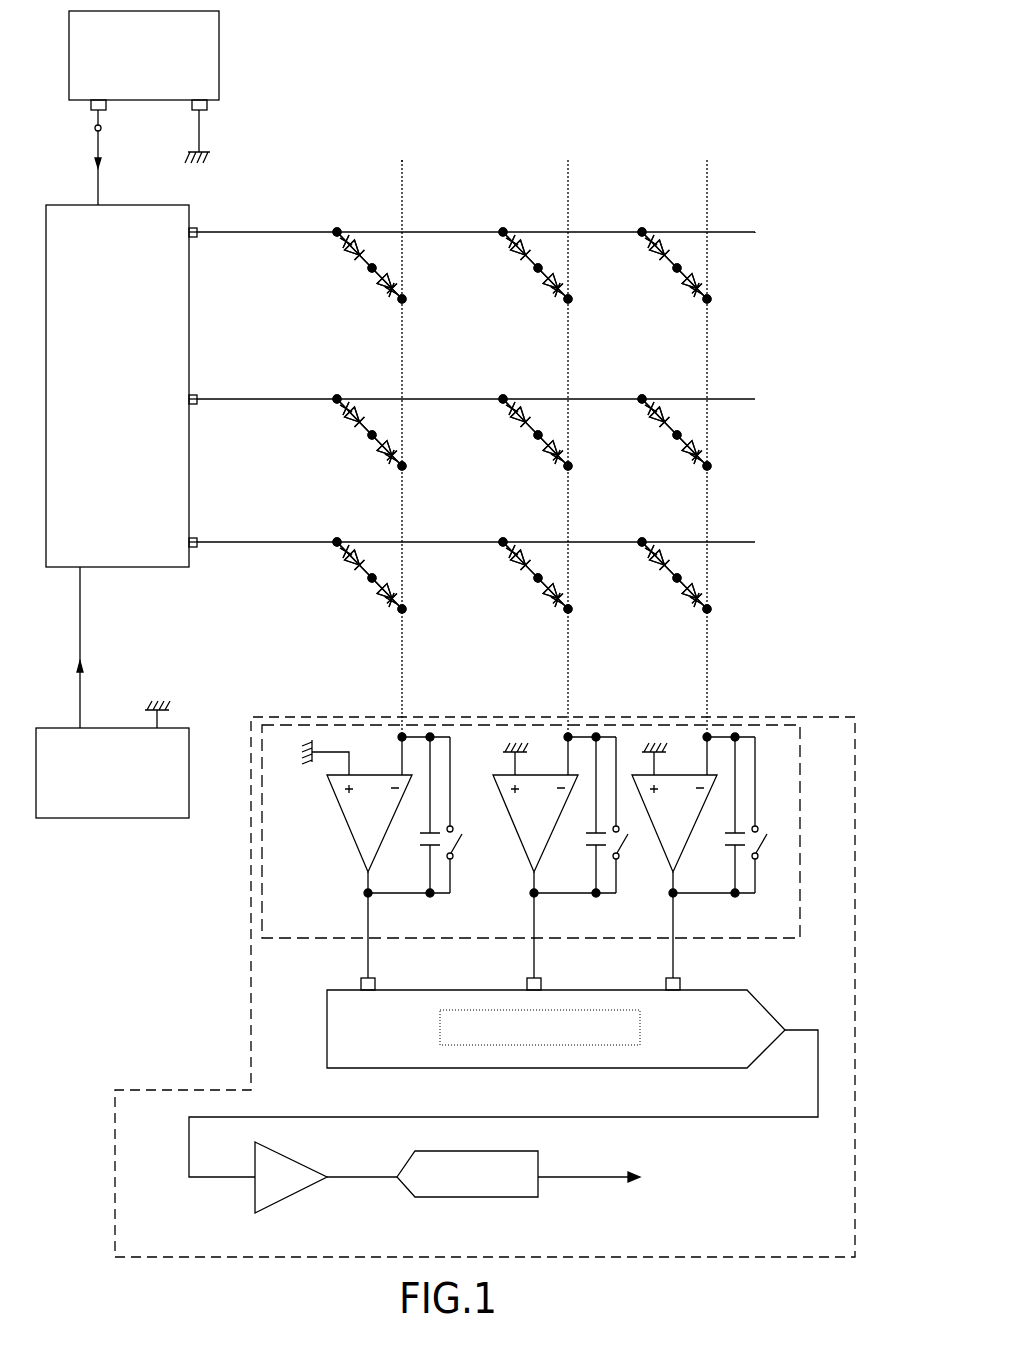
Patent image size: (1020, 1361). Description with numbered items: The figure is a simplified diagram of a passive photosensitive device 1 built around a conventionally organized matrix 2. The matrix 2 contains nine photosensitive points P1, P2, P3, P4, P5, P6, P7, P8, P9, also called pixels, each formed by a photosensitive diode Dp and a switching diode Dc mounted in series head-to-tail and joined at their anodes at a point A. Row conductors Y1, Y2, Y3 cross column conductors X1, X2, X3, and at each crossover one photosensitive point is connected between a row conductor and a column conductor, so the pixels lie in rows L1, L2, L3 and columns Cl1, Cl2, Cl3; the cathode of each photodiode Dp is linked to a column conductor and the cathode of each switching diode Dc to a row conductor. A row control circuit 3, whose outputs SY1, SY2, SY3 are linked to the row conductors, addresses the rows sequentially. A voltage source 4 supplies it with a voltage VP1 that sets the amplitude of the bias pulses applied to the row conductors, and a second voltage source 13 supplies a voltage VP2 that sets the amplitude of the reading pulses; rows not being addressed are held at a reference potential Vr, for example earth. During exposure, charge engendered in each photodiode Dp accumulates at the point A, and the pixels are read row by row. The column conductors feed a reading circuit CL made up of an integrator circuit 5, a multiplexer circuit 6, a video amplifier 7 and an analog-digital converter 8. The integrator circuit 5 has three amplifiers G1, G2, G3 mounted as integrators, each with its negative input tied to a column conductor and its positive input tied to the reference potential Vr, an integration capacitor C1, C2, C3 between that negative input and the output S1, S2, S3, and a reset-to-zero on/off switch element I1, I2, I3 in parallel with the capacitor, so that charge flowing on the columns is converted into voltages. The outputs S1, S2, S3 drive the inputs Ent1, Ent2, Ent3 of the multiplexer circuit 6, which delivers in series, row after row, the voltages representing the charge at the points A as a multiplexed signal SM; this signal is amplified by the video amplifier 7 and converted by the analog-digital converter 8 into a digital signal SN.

The photosensitive device 1 is at (678, 34).
The matrix 2 is at (756, 50).
The row control circuit 3 is at (45, 352).
The voltage source 4 is at (219, 60).
The integrator circuit 5 is at (800, 902).
The multiplexer circuit 6 is at (747, 990).
The video amplifier 7 is at (308, 1188).
The analog-digital converter 8 is at (502, 1198).
The voltage source 13 is at (88, 818).
The reference potential Vr is at (200, 132).
The voltage VP1 is at (117, 157).
The voltage VP2 is at (51, 647).
The row conductor Y1 is at (738, 232).
The row conductor Y2 is at (738, 399).
The row conductor Y3 is at (738, 542).
The row L1 is at (786, 260).
The row L2 is at (786, 424).
The row L3 is at (786, 607).
The output SY1 is at (194, 238).
The output SY2 is at (194, 405).
The output SY3 is at (194, 548).
The column conductor X1 is at (403, 183).
The column conductor X2 is at (569, 183).
The column conductor X3 is at (708, 183).
The column Cl1 is at (390, 172).
The column Cl2 is at (556, 172).
The column Cl3 is at (695, 172).
The switching diode Dc is at (477, 403).
The point A is at (488, 436).
The photosensitive diode Dp is at (524, 464).
The photosensitive point P1 is at (329, 300).
The photosensitive point P2 is at (492, 300).
The photosensitive point P3 is at (645, 300).
The photosensitive point P4 is at (329, 467).
The photosensitive point P5 is at (492, 467).
The photosensitive point P6 is at (645, 467).
The photosensitive point P7 is at (329, 610).
The photosensitive point P8 is at (492, 610).
The photosensitive point P9 is at (645, 610).
The amplifier G1 is at (343, 820).
The amplifier G2 is at (528, 832).
The amplifier G3 is at (672, 834).
The integration capacitor C1 is at (424, 838).
The integration capacitor C2 is at (587, 838).
The integration capacitor C3 is at (727, 838).
The on/off switch element I1 is at (456, 808).
The on/off switch element I2 is at (622, 808).
The on/off switch element I3 is at (763, 808).
The output S1 is at (363, 895).
The output S2 is at (529, 895).
The output S3 is at (669, 895).
The input Ent1 is at (361, 979).
The input Ent2 is at (527, 979).
The input Ent3 is at (666, 979).
The reading circuit CL is at (250, 952).
The multiplexed signal SM is at (504, 1090).
The digital signal SN is at (589, 1167).